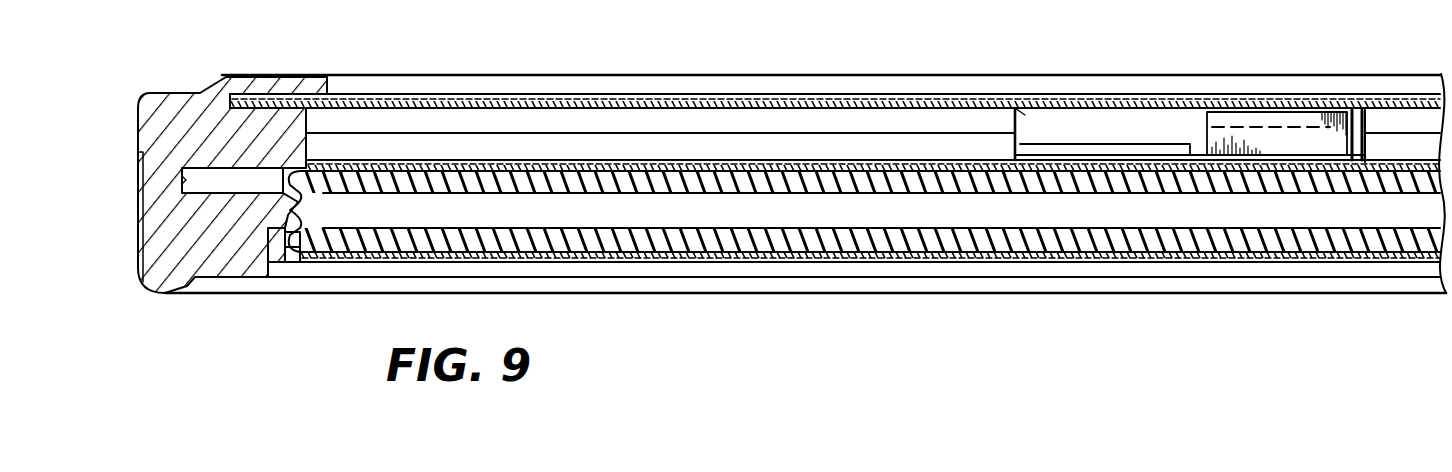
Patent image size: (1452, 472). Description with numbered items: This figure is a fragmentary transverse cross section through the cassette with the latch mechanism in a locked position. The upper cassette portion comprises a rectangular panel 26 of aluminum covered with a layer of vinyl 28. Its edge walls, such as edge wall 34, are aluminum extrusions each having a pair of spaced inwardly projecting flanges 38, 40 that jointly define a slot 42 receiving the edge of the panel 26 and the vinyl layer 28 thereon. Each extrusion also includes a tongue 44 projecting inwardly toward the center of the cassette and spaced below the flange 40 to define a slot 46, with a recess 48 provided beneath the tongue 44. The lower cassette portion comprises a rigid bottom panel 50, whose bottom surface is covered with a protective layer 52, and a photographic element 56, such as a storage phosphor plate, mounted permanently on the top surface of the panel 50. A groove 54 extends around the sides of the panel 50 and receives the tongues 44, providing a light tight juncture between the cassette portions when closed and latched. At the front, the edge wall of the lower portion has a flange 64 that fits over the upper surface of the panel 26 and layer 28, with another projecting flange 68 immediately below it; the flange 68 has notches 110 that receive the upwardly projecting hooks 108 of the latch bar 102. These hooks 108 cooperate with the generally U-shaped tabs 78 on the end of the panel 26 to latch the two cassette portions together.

The edge wall 34 is at (157, 92).
The slot 42 is at (240, 94).
The flange 40 is at (263, 118).
The flange 38 is at (302, 94).
The slot 46 is at (184, 178).
The flange 64 is at (547, 57).
The layer of vinyl 28 is at (703, 96).
The rectangular panel 26 is at (769, 101).
The projecting flange 68 is at (822, 120).
The photographic element 56 is at (910, 162).
The bottom panel 50 is at (975, 238).
The groove 54 is at (300, 212).
The layer 52 is at (905, 262).
The recess 48 is at (273, 262).
The tongue 44 is at (293, 248).
The notches 110 is at (1030, 106).
The latch bar 102 is at (1093, 143).
The hooks 108 is at (1268, 130).
The tabs 78 is at (1210, 128).